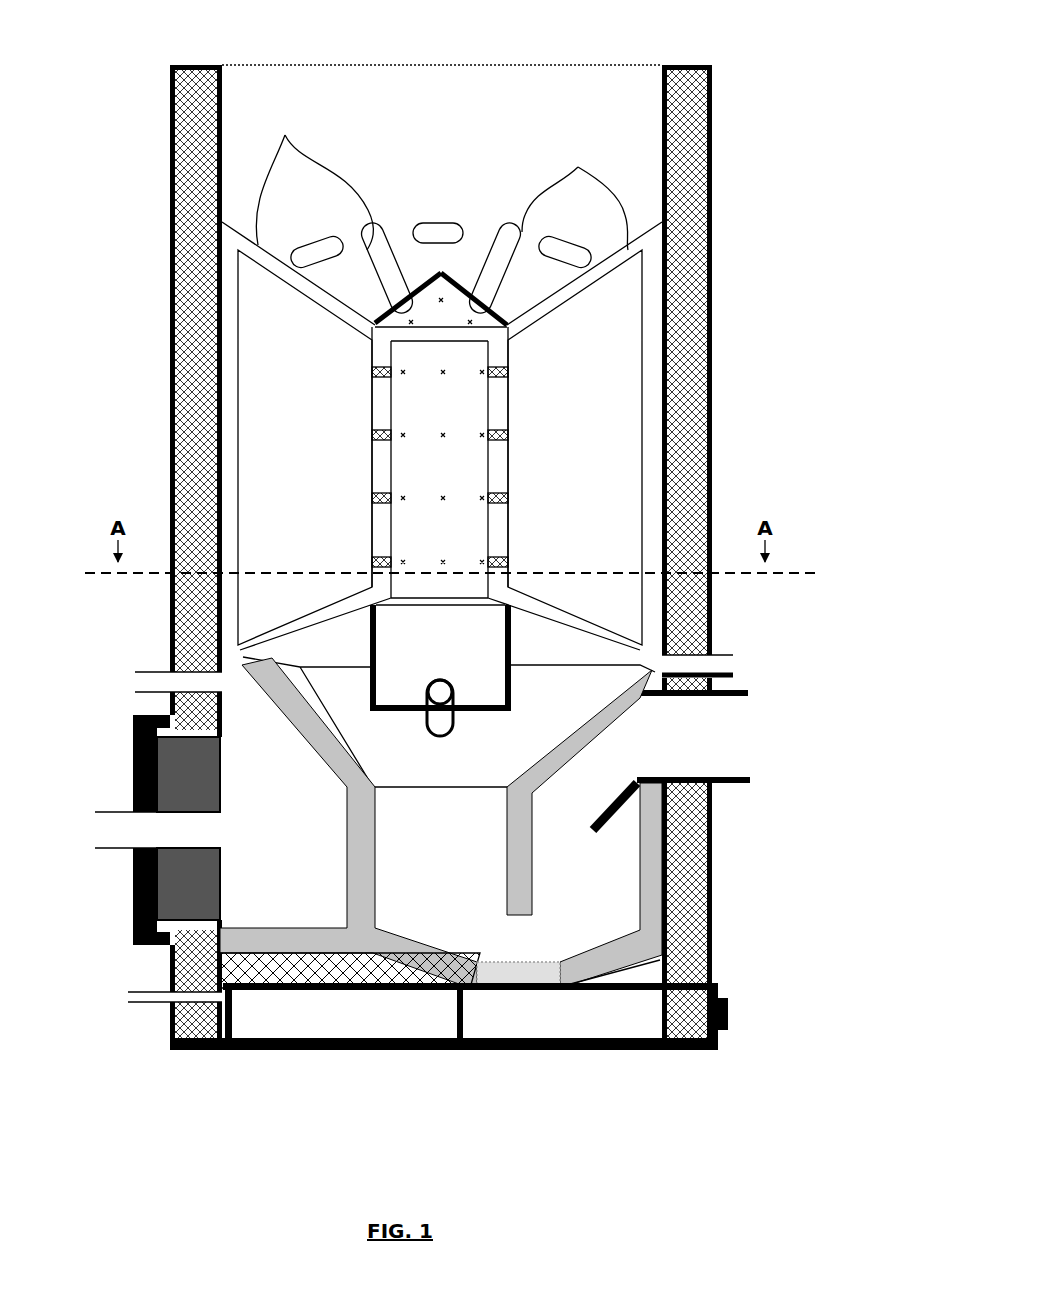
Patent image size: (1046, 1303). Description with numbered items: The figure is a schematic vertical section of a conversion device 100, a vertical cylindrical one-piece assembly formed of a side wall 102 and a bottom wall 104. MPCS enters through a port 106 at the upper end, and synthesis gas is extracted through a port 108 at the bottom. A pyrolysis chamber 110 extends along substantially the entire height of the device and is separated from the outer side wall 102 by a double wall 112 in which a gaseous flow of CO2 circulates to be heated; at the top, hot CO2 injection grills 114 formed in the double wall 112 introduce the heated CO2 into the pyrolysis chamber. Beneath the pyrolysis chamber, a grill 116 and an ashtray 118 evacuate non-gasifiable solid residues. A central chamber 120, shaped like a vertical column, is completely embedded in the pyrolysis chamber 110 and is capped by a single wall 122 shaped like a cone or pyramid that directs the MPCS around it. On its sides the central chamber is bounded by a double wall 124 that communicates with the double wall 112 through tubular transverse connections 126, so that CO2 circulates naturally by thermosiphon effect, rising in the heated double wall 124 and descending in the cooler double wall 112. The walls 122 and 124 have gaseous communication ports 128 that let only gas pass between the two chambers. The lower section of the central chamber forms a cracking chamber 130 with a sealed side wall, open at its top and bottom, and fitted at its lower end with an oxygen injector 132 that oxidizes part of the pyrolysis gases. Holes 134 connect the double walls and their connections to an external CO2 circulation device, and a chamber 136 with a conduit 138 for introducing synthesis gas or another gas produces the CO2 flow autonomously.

The conversion device 100 is at (720, 1097).
The side wall 102 is at (688, 153).
The bottom wall 104 is at (250, 1048).
The port 106 is at (448, 78).
The port 108 is at (747, 740).
The pyrolysis chamber 110 is at (446, 504).
The double wall 112 is at (222, 322).
The hot CO2 injection grills 114 is at (320, 247).
The grill 116 is at (505, 962).
The ashtray 118 is at (420, 1010).
The central chamber 120 is at (440, 462).
The single wall 122 is at (470, 283).
The double wall 124 is at (382, 403).
The tubular transverse connections 126 is at (287, 135).
The gaseous communication ports 128 is at (498, 312).
The cracking chamber 130 is at (440, 656).
The oxygen injector 132 is at (453, 688).
The holes 134 is at (125, 678).
The chamber 136 is at (350, 823).
The conduit 138 is at (100, 812).